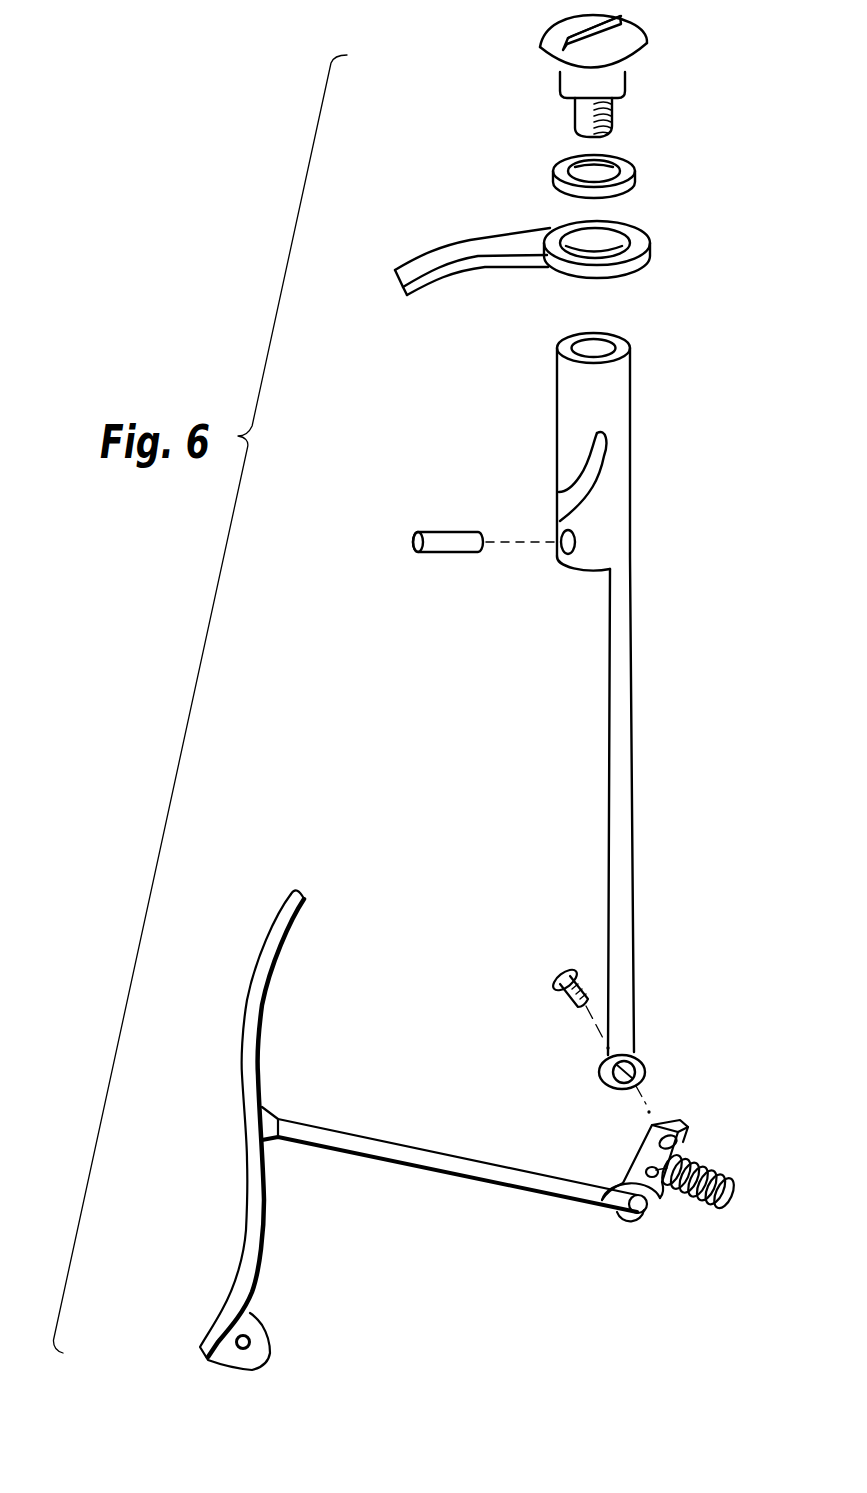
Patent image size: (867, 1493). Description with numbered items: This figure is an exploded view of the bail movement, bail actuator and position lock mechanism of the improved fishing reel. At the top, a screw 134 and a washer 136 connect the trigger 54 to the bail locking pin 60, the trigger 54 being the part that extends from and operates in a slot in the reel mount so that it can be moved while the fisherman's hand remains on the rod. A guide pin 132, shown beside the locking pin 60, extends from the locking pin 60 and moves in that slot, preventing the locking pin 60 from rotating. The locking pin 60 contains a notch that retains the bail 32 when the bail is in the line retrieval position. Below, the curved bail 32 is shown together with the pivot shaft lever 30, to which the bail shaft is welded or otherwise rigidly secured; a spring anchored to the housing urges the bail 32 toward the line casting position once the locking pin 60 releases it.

The pivot shaft lever 30 is at (653, 1203).
The bail 32 is at (261, 973).
The trigger 54 is at (461, 245).
The bail locking pin 60 is at (617, 392).
The guide pin 132 is at (448, 537).
The screw 134 is at (627, 43).
The washer 136 is at (630, 170).